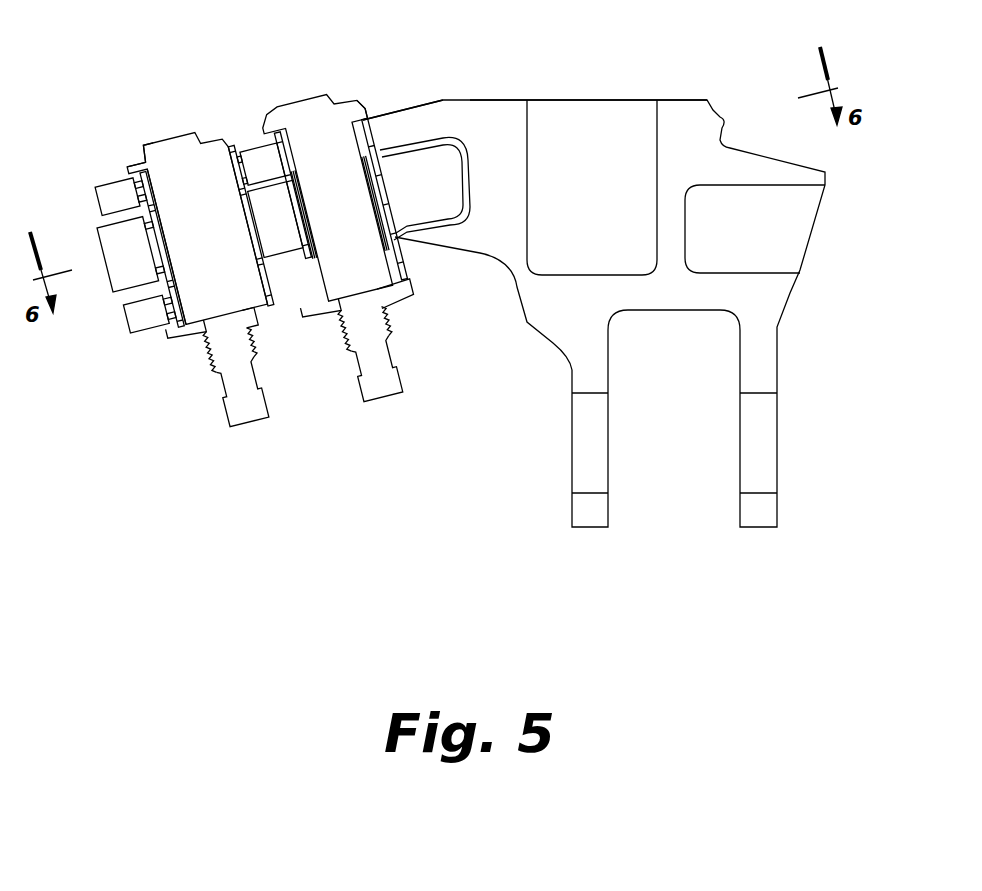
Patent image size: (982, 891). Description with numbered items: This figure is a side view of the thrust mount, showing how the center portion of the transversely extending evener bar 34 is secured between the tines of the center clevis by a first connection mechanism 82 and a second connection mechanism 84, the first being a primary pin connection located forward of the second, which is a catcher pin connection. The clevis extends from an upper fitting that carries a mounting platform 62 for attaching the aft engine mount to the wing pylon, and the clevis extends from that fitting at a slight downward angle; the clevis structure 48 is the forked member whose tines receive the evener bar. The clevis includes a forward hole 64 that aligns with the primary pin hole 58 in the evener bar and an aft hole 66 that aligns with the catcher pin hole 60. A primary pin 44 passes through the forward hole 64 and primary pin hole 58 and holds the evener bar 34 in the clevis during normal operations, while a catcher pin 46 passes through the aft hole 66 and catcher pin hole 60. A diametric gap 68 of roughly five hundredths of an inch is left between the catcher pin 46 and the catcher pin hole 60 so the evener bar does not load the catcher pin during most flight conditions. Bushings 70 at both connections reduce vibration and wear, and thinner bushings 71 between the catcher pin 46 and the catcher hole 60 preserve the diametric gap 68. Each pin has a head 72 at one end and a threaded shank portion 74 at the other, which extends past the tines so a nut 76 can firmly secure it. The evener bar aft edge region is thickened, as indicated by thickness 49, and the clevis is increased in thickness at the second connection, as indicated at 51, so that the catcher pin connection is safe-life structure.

The evener bar 34 is at (110, 243).
The primary pin 44 is at (203, 150).
The catcher pin 46 is at (297, 117).
The mounting bracket 48 is at (463, 170).
The evener bar aft edge thickness 49 is at (397, 157).
The clevis thickness increase 51 is at (248, 142).
The primary pin hole 58 is at (167, 267).
The catcher pin hole 60 is at (375, 228).
The mounting platform 62 is at (684, 99).
The forward hole 64 is at (150, 192).
The aft hole 66 is at (370, 156).
The diametric gap 68 is at (333, 192).
The bushings 70 is at (245, 211).
The thinner bushings 71 is at (300, 192).
The head 72 is at (165, 135).
The threaded shank portion 74 is at (205, 350).
The nut 76 is at (208, 372).
The first connection mechanism 82 is at (112, 164).
The second connection mechanism 84 is at (399, 76).